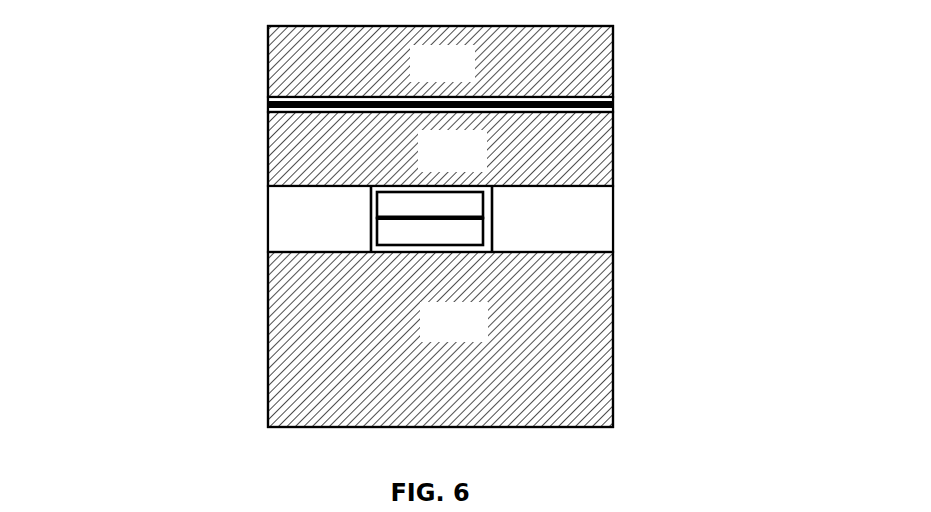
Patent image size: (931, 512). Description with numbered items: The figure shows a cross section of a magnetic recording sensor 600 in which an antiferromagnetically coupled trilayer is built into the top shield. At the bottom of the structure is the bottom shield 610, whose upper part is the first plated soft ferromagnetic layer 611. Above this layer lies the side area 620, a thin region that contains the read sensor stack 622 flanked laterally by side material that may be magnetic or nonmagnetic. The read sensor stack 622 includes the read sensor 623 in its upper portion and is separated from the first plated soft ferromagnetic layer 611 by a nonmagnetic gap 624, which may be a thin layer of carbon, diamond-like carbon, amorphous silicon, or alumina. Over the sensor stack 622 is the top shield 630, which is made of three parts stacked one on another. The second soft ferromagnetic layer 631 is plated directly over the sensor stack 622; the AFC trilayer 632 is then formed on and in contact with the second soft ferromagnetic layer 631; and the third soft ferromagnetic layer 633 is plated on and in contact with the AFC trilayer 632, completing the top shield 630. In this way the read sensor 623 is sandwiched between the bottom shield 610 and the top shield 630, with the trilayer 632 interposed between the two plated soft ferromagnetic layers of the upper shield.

The magnetic recording sensor 600 is at (810, 41).
The bottom shield 610 is at (489, 339).
The first plated soft ferromagnetic layer 611 is at (632, 425).
The side area 620 is at (485, 219).
The read sensor stack 622 is at (448, 219).
The read sensor 623 is at (453, 217).
The nonmagnetic gap 624 is at (493, 235).
The top shield 630 is at (397, 109).
The second soft ferromagnetic layer 631 is at (440, 149).
The AFC trilayer 632 is at (268, 104).
The third soft ferromagnetic layer 633 is at (440, 61).